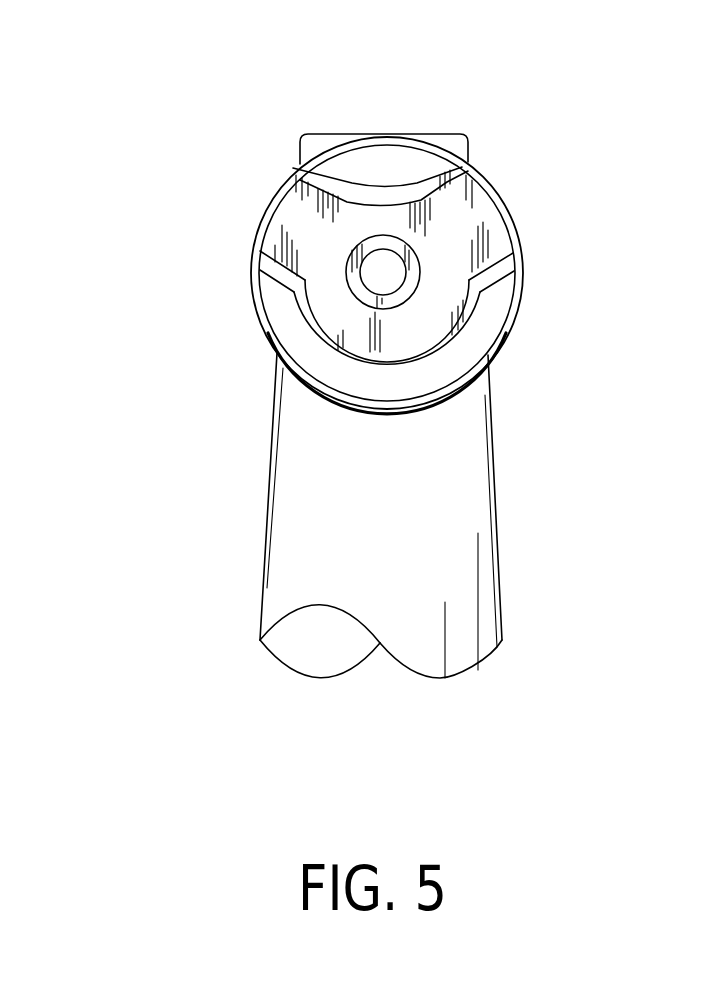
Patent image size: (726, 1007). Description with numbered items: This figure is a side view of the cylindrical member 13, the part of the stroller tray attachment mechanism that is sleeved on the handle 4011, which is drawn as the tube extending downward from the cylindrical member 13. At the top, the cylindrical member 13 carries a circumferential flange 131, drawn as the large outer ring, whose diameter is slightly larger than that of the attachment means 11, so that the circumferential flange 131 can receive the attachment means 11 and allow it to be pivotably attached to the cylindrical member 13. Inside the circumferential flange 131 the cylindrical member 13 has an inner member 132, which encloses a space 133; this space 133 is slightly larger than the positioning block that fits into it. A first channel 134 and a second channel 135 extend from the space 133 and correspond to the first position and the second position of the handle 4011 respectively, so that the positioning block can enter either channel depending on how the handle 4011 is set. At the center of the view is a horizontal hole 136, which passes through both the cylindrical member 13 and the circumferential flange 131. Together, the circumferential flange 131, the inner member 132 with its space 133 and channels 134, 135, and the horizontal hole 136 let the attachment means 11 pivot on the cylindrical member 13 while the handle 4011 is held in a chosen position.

The attachment means 11 is at (558, 331).
The cylindrical member 13 is at (273, 355).
The circumferential flange 131 is at (517, 235).
The inner member 132 is at (303, 302).
The space 133 is at (408, 340).
The first channel 134 is at (308, 198).
The second channel 135 is at (463, 202).
The horizontal hole 136 is at (377, 272).
The handle 4011 is at (483, 590).